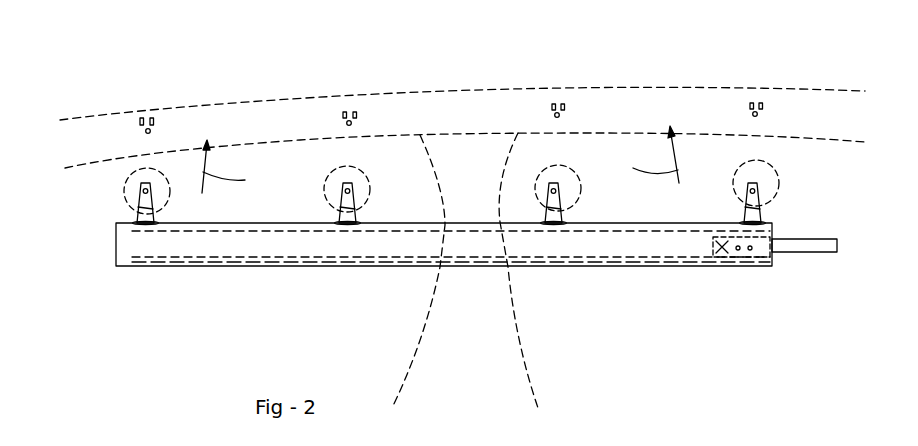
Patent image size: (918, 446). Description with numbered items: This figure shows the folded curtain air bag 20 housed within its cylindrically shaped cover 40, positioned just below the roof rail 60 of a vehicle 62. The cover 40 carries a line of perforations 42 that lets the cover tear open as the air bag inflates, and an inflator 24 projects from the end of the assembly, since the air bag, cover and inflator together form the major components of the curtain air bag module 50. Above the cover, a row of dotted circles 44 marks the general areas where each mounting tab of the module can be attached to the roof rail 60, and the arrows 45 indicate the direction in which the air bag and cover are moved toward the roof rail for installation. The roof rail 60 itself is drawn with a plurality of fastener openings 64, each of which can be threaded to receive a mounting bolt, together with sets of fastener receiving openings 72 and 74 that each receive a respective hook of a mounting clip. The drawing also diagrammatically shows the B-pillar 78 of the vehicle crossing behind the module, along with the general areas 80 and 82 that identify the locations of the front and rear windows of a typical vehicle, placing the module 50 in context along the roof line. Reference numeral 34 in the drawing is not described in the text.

The air bag 20 is at (295, 267).
The inflator 24 is at (807, 253).
The mounting pins 34 is at (355, 168).
The cover 40 is at (237, 268).
The line of perforations 42 is at (150, 258).
The dotted circles 44 is at (124, 192).
The arrows 45 is at (440, 159).
The curtain air bag module 50 is at (118, 266).
The roof rail 60 is at (312, 97).
The vehicle 62 is at (100, 100).
The fastener openings 64 is at (145, 131).
The fastener receiving openings 72 is at (140, 118).
The fastener receiving openings 74 is at (153, 116).
The B-pillar 78 is at (472, 343).
The general area of front window 80 is at (376, 317).
The general area of rear window 82 is at (650, 309).